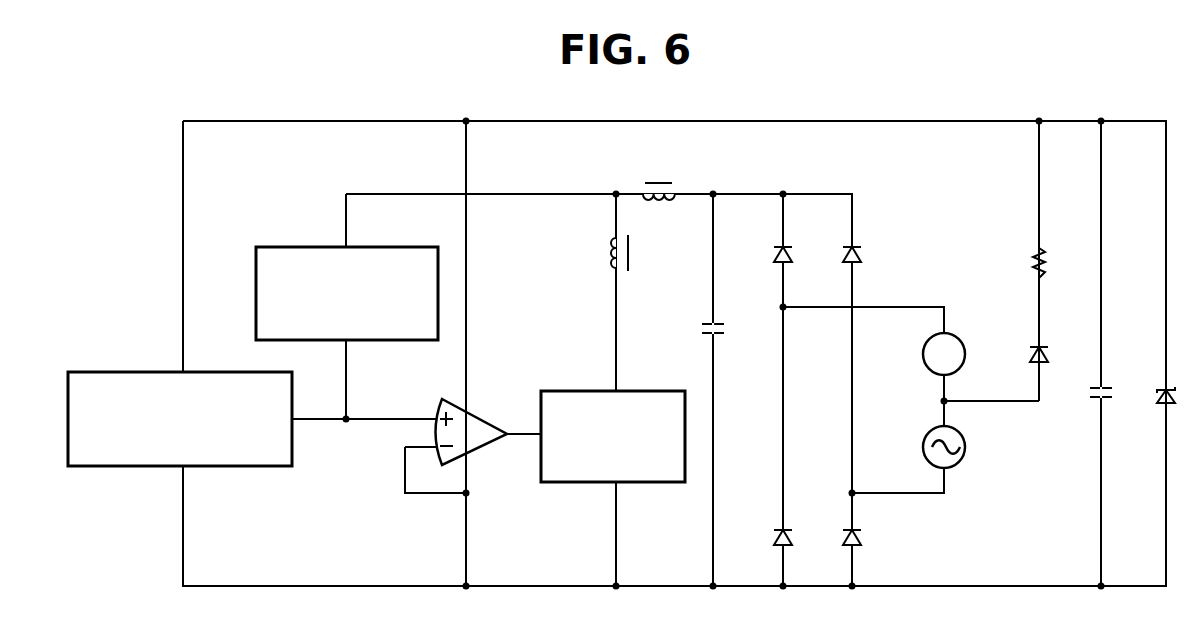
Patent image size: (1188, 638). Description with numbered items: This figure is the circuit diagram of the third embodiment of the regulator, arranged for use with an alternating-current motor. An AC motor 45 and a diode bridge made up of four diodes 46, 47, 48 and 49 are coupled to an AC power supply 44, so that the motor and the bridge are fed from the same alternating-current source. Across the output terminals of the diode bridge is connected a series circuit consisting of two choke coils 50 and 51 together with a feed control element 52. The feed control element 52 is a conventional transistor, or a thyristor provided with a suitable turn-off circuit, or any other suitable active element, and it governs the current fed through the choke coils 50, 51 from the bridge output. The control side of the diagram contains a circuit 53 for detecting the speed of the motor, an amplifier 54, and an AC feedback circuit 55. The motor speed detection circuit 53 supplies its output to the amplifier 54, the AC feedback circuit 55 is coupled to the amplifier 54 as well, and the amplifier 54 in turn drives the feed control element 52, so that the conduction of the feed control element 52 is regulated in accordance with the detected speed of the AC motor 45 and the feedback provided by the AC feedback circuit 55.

The AC power supply 44 is at (962, 455).
The AC motor 45 is at (960, 340).
The diode 46 is at (861, 250).
The diode 47 is at (861, 533).
The diode 48 is at (792, 250).
The diode 49 is at (790, 535).
The choke coil 50 is at (660, 183).
The choke coil 51 is at (630, 253).
The feed control element 52 is at (575, 391).
The motor speed detection circuit 53 is at (118, 372).
The amplifier 54 is at (480, 449).
The AC feedback circuit 55 is at (295, 247).